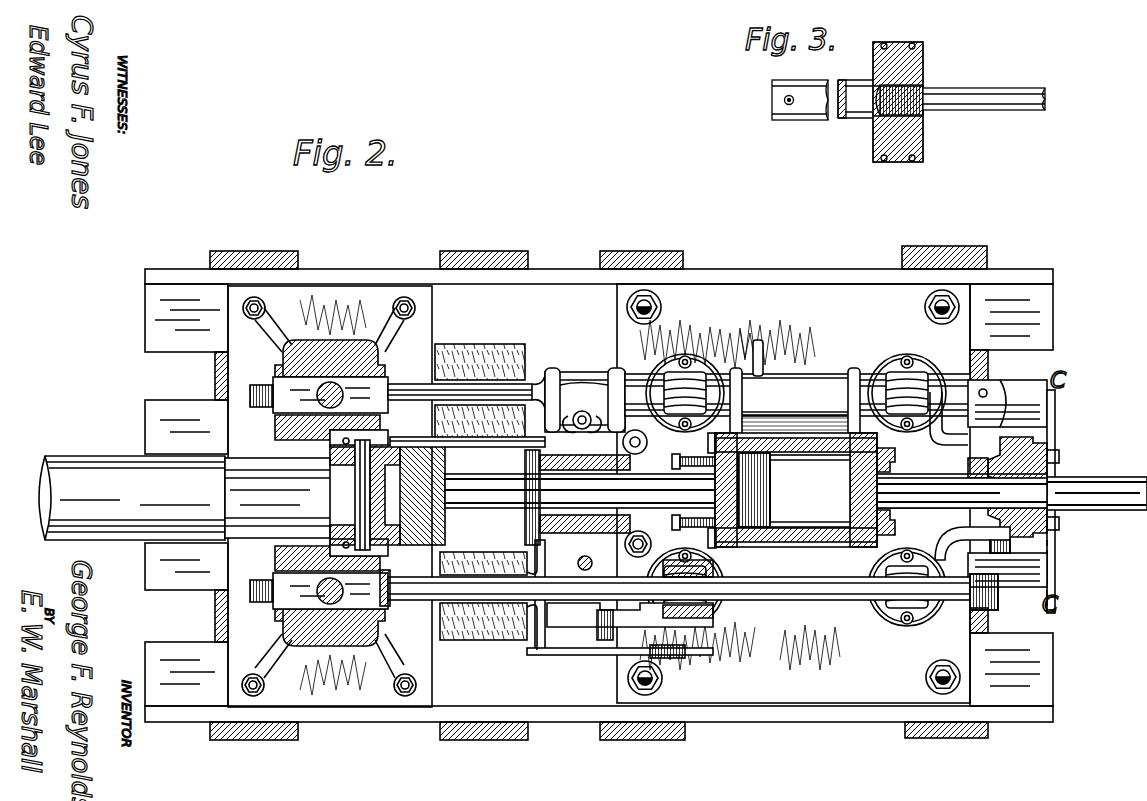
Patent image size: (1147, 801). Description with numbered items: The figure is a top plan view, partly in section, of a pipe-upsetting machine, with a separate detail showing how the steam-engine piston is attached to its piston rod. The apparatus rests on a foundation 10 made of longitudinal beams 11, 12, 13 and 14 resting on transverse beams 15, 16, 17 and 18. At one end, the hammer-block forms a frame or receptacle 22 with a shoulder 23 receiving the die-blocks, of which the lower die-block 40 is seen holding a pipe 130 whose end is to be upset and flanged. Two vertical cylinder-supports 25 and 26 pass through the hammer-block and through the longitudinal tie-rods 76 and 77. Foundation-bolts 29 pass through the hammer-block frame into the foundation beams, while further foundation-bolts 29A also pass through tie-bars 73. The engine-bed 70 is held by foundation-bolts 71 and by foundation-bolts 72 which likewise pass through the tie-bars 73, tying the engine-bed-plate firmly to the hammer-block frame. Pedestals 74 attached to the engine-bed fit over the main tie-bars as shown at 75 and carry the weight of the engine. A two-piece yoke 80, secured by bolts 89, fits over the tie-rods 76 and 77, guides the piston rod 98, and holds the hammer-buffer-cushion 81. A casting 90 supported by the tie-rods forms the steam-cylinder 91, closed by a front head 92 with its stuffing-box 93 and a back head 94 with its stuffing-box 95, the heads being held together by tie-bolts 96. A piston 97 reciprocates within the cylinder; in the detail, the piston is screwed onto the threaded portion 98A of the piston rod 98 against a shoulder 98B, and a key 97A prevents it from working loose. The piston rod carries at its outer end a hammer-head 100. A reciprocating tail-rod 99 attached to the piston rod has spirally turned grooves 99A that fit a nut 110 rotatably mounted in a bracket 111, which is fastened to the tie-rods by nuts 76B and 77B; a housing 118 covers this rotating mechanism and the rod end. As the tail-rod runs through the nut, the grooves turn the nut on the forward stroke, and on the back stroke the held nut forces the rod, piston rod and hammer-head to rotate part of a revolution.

In FIG. 2, the foundation 10 is at (575, 275).
In FIG. 2, the longitudinal beam 11 is at (1062, 658).
In FIG. 2, the longitudinal beam 12 is at (1070, 550).
In FIG. 2, the longitudinal beam 13 is at (1055, 415).
In FIG. 2, the longitudinal beam 14 is at (1005, 270).
In FIG. 2, the transverse beam 15 is at (215, 740).
In FIG. 2, the transverse beam 16 is at (445, 740).
In FIG. 2, the transverse beam 17 is at (605, 740).
In FIG. 2, the transverse beam 18 is at (910, 738).
In FIG. 2, the frame or receptacle 22 is at (370, 430).
In FIG. 2, the shoulder 23 is at (275, 430).
In FIG. 2, the vertical cylinder-support 25 is at (320, 598).
In FIG. 2, the vertical cylinder-support 26 is at (333, 392).
In FIG. 2, the foundation-bolt 29 is at (408, 300).
In FIG. 2, the foundation-bolt 29A is at (395, 598).
In FIG. 2, the die-block 40 is at (330, 555).
In FIG. 2, the engine-bed 70 is at (810, 295).
In FIG. 2, the foundation-bolt 71 is at (655, 305).
In FIG. 2, the foundation-bolt 72 is at (649, 493).
In FIG. 2, the tie-bar 73 is at (468, 440).
In FIG. 2, the pedestal 74 is at (690, 375).
In FIG. 2, the pedestal fit over tie-bars 75 is at (700, 612).
In FIG. 2, the main tie-rod 76 is at (460, 580).
In FIG. 2, the nut 76B is at (998, 590).
In FIG. 2, the main tie-rod 77 is at (462, 395).
In FIG. 2, the nut 77B is at (995, 378).
In FIG. 2, the yoke 80 is at (585, 385).
In FIG. 2, the hammer-buffer-cushion 81 is at (600, 462).
In FIG. 2, the bolt 89 is at (582, 420).
In FIG. 2, the casting 90 is at (810, 383).
In FIG. 2, the steam-cylinder 91 is at (805, 513).
In FIG. 2, the front head 92 is at (693, 450).
In FIG. 2, the stuffing-box 93 is at (693, 533).
In FIG. 2, the back head 94 is at (918, 450).
In FIG. 2, the stuffing-box 95 is at (896, 523).
In FIG. 2, the tie-bolt 96 is at (795, 445).
In FIG. 3, the piston 97 is at (925, 140).
In FIG. 2, the piston 97 is at (755, 462).
In FIG. 3, the key 97A is at (905, 96).
In FIG. 3, the piston rod 98 is at (800, 120).
In FIG. 2, the piston rod 98 is at (688, 495).
In FIG. 3, the threaded portion 98A is at (905, 100).
In FIG. 3, the shoulder 98B is at (880, 118).
In FIG. 3, the reciprocating tail-rod 99 is at (968, 103).
In FIG. 2, the reciprocating tail-rod 99 is at (918, 468).
In FIG. 2, the spirally turned grooves 99A is at (950, 530).
In FIG. 2, the hammer-head 100 is at (345, 510).
In FIG. 2, the nut 110 is at (1059, 456).
In FIG. 2, the bracket 111 is at (960, 440).
In FIG. 2, the housing 118 is at (1120, 470).
In FIG. 2, the pipe 130 is at (105, 462).